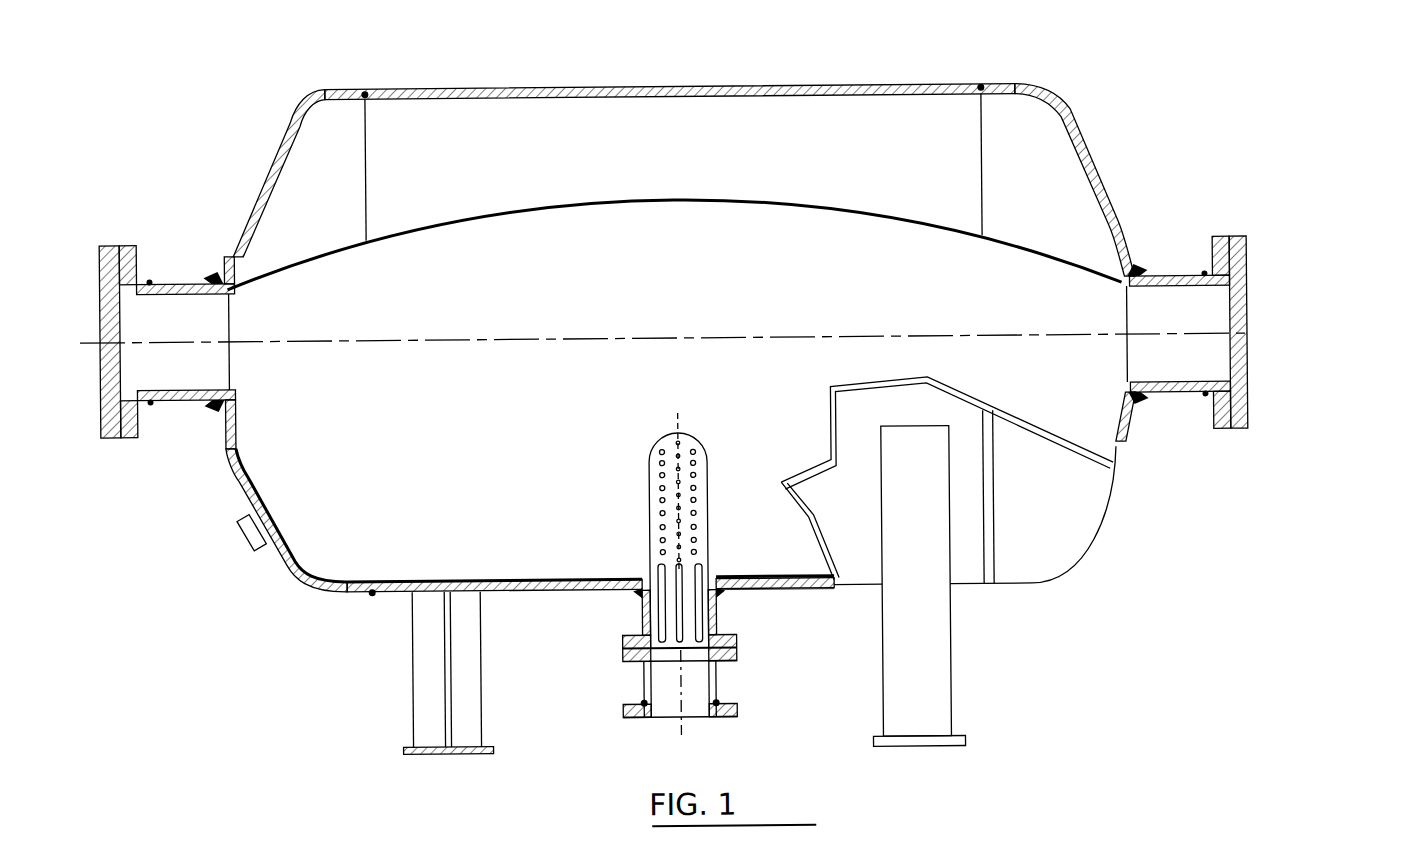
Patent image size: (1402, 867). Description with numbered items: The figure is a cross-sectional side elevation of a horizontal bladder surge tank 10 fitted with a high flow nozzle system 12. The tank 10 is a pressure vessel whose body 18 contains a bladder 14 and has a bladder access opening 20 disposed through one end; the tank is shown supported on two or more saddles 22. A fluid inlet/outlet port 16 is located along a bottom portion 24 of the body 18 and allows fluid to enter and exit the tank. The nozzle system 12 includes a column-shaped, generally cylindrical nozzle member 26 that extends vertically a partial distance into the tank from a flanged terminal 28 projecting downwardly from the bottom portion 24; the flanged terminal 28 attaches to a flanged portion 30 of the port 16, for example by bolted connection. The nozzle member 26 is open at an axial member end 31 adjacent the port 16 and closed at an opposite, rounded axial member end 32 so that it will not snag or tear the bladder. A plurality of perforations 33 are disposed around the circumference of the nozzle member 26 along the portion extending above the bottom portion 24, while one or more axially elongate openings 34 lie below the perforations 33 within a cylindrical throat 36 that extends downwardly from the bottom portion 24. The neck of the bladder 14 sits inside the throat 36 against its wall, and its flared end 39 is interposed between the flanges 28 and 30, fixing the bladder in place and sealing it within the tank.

The horizontal bladder surge tank 10 is at (673, 378).
The high flow nozzle system 12 is at (679, 569).
The bladder 14 is at (872, 207).
The fluid inlet/outlet port 16 is at (657, 716).
The body 18 is at (857, 88).
The bladder access opening 20 is at (1268, 322).
The saddles 22 is at (410, 694).
The bottom portion 24 is at (762, 591).
The nozzle member 26 is at (666, 502).
The flanged terminal 28 is at (632, 636).
The flanged portion 30 is at (640, 664).
The open axial member end 31 is at (695, 661).
The closed axial member end 32 is at (684, 428).
The perforations 33 is at (657, 527).
The elongate openings 34 is at (679, 590).
The cylindrical throat 36 is at (636, 601).
The flared end 39 is at (722, 652).